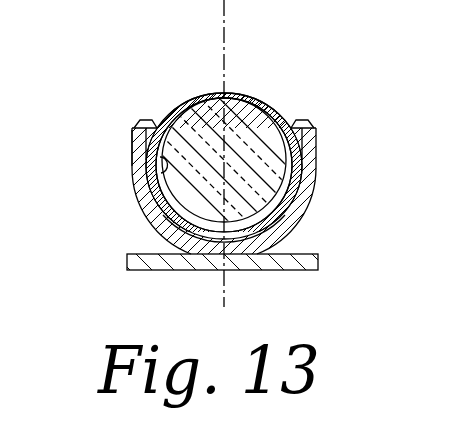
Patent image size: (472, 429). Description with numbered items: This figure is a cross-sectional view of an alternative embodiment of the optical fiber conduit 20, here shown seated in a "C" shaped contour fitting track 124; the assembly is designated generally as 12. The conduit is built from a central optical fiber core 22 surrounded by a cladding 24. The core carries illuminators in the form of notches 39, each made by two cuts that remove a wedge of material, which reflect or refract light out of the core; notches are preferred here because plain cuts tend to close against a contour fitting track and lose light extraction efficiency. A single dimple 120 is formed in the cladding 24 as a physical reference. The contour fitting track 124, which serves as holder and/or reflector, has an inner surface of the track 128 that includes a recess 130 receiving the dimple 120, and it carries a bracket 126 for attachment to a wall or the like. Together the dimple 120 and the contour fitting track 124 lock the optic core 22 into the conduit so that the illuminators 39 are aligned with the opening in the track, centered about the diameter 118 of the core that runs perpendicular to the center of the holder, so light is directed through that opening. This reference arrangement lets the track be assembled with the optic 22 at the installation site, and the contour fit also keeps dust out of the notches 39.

The ball assembly 12 is at (457, 106).
The optical fiber conduit 20 is at (326, 207).
The optical fiber core 22 is at (273, 152).
The cladding 24 is at (267, 103).
The notches 39 is at (225, 236).
The diameter 118 is at (233, 50).
The dimple 120 is at (153, 121).
The contour fitting track 124 is at (129, 210).
The bracket 126 is at (319, 268).
The inner surface of the track 128 is at (163, 171).
The recess 130 is at (140, 127).